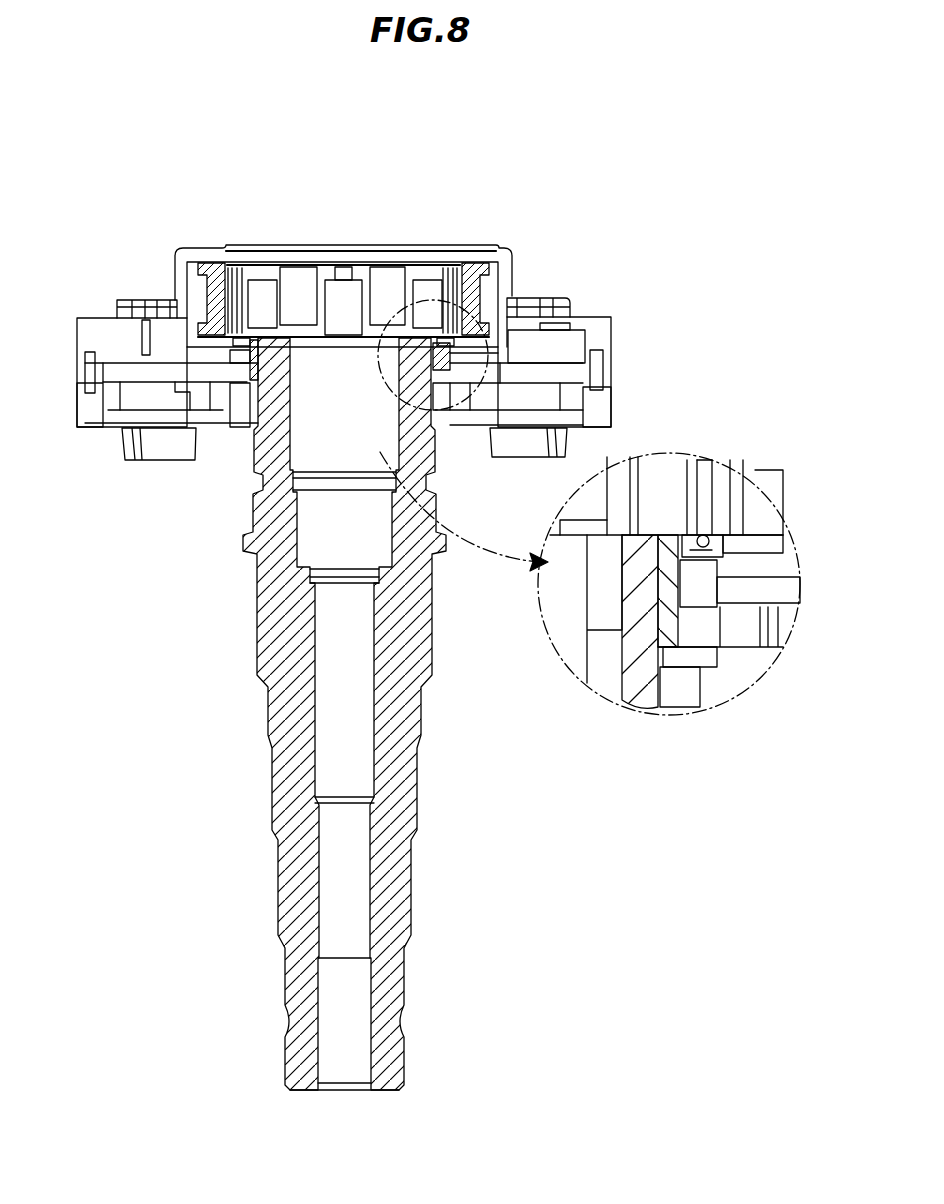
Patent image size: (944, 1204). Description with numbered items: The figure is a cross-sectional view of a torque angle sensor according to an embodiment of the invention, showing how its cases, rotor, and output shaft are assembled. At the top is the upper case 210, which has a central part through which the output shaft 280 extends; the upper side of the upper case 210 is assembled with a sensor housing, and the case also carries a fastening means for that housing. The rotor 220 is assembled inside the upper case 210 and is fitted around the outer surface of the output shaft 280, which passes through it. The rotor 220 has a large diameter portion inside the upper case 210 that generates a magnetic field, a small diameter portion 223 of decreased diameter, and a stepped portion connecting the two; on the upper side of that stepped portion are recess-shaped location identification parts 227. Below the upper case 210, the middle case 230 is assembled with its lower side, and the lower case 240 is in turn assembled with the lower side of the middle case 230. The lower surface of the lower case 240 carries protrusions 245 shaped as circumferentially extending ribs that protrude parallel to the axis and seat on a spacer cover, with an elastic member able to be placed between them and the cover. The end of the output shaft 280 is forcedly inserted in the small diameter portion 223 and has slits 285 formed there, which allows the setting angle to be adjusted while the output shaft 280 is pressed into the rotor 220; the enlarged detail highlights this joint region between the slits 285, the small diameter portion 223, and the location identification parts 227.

The upper case 210 is at (503, 258).
The rotor 220 is at (388, 283).
The small diameter portion 223 is at (718, 655).
The location identification parts 227 is at (703, 535).
The middle case 230 is at (88, 330).
The lower case 240 is at (148, 417).
The protrusions 245 is at (160, 447).
The output shaft 280 is at (630, 675).
The slits 285 is at (625, 592).